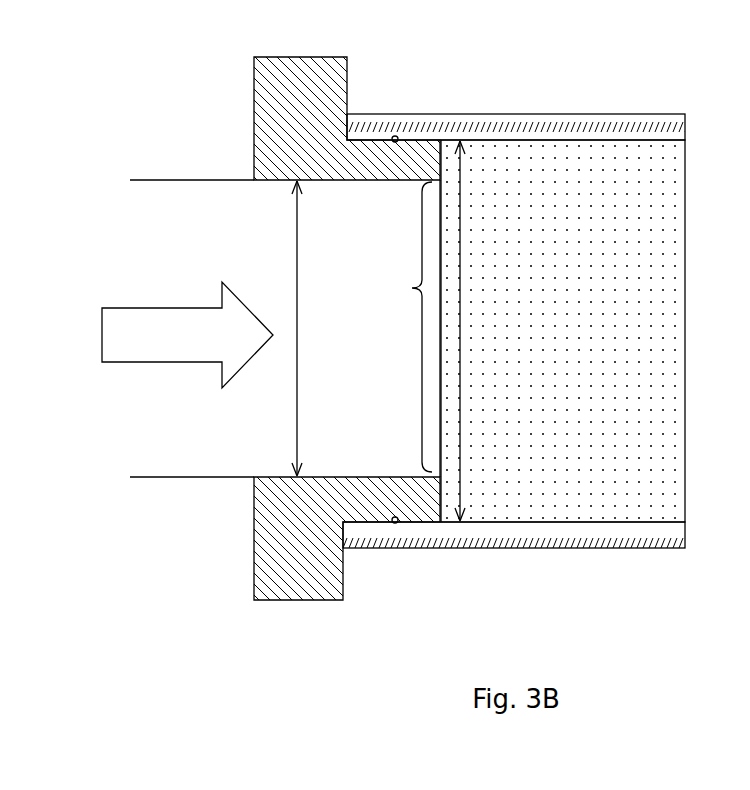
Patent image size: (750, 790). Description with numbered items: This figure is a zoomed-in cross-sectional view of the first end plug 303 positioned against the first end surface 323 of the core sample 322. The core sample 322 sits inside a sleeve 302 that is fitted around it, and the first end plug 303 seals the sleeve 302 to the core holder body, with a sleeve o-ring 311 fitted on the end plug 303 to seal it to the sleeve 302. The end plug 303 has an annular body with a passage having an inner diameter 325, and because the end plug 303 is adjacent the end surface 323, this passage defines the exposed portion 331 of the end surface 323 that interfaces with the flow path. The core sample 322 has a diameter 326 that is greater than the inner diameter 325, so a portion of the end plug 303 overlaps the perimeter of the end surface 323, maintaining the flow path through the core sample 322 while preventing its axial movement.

The sleeve 302 is at (572, 540).
The first end plug 303 is at (297, 585).
The sleeve o-ring 311 is at (395, 525).
The core sample 322 is at (575, 323).
The first end surface 323 is at (440, 212).
The inner diameter 325 is at (280, 328).
The diameter 326 is at (476, 331).
The exposed portion 331 is at (404, 327).